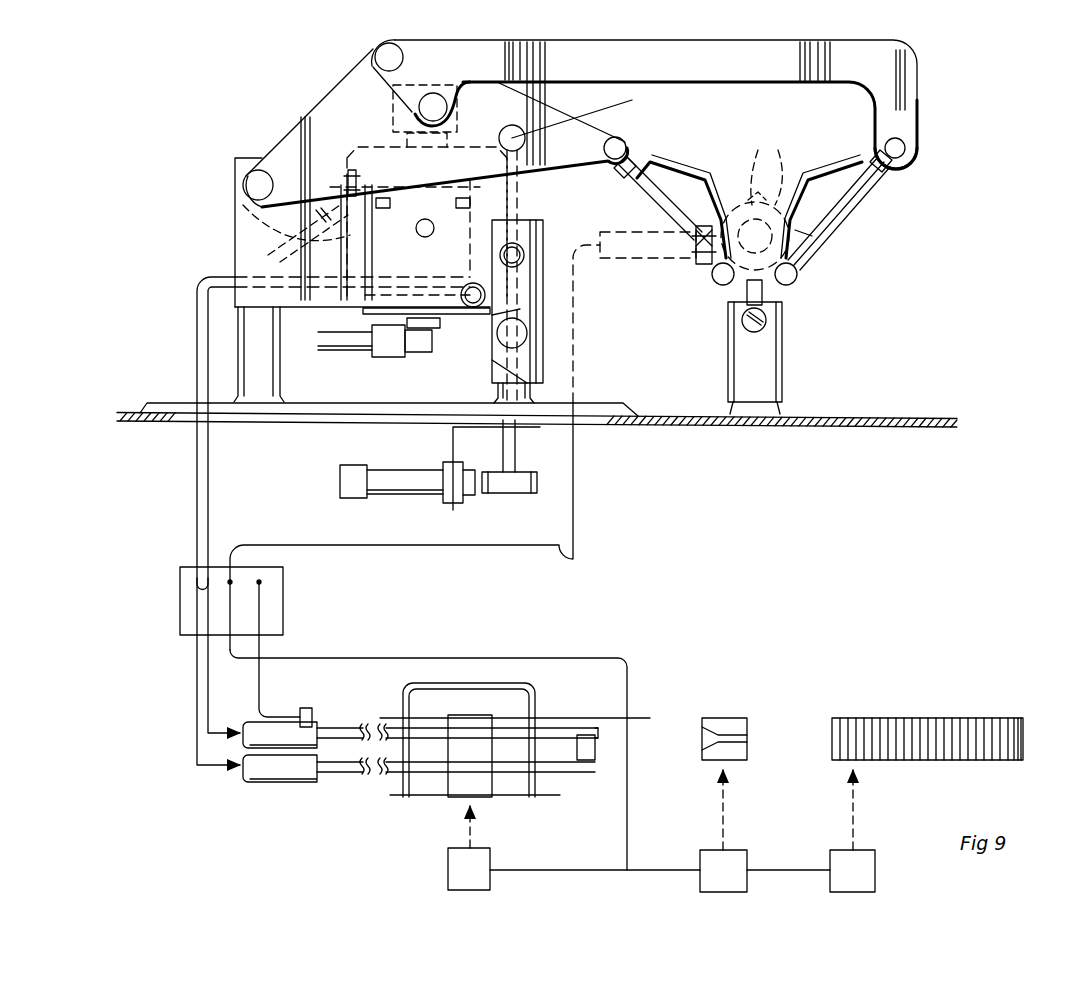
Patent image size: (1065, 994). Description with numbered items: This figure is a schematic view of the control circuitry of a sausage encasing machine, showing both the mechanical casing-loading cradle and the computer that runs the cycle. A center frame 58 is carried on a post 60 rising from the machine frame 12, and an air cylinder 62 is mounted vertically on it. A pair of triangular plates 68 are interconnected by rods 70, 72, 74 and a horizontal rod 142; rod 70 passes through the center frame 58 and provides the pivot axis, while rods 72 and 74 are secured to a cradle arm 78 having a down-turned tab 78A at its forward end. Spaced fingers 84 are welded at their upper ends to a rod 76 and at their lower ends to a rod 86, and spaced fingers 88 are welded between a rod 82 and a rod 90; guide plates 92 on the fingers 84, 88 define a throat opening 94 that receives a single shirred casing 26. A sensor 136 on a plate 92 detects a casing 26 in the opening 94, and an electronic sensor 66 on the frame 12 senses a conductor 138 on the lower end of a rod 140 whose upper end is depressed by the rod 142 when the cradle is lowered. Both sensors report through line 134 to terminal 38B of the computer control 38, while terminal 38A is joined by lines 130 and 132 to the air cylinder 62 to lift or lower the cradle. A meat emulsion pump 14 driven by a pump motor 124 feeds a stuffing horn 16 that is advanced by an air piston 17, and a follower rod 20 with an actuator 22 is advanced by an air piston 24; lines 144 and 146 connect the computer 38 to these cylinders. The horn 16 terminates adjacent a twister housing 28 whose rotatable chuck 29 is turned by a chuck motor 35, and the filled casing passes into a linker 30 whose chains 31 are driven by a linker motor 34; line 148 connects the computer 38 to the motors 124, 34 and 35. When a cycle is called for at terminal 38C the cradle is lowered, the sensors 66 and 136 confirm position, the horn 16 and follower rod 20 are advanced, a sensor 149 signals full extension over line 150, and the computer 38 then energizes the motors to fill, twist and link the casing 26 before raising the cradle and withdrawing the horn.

The frame 12 is at (118, 408).
The meat emulsion pump 14 is at (520, 703).
The stuffing horn 16 is at (808, 246).
The air piston 17 is at (340, 712).
The follower rod 20 is at (764, 324).
The actuator 22 is at (770, 295).
The air piston 24 is at (300, 782).
The shirred sausage casing 26 is at (772, 185).
The twister housing 28 is at (730, 715).
The rotatable chuck 29 is at (702, 742).
The linker 30 is at (980, 712).
The chains 31 is at (905, 735).
The linker motor 34 is at (862, 850).
The chuck motor 35 is at (730, 850).
The computer control 38 is at (286, 596).
The terminal 38A is at (204, 580).
The computer terminal 38B is at (230, 580).
The terminal 38C is at (262, 580).
The center frame 58 is at (240, 187).
The post 60 is at (253, 350).
The air cylinder 62 is at (230, 209).
The electronic sensor 66 is at (345, 484).
The triangular plates 68 is at (338, 95).
The rod 70 is at (248, 183).
The rod 72 is at (380, 58).
The rod 74 is at (420, 100).
The rod 76 is at (628, 152).
The cradle arm 78 is at (620, 44).
The down-turned tab 78A is at (908, 108).
The rod 82 is at (905, 145).
The fingers 84 is at (470, 22).
The rod 86 is at (718, 282).
The fingers 88 is at (815, 235).
The rod 90 is at (792, 262).
The guide plates 92 is at (712, 178).
The throat opening 94 is at (845, 203).
The pump motor 124 is at (450, 848).
The line 130 is at (196, 514).
The line 132 is at (206, 533).
The line 134 is at (578, 348).
The sensor 136 is at (655, 262).
The conductor 138 is at (537, 482).
The rod 140 is at (515, 458).
The horizontal rod 142 is at (584, 116).
The line 144 is at (196, 702).
The line 146 is at (208, 680).
The line 148 is at (520, 868).
The sensor 149 is at (292, 657).
The line 150 is at (258, 677).